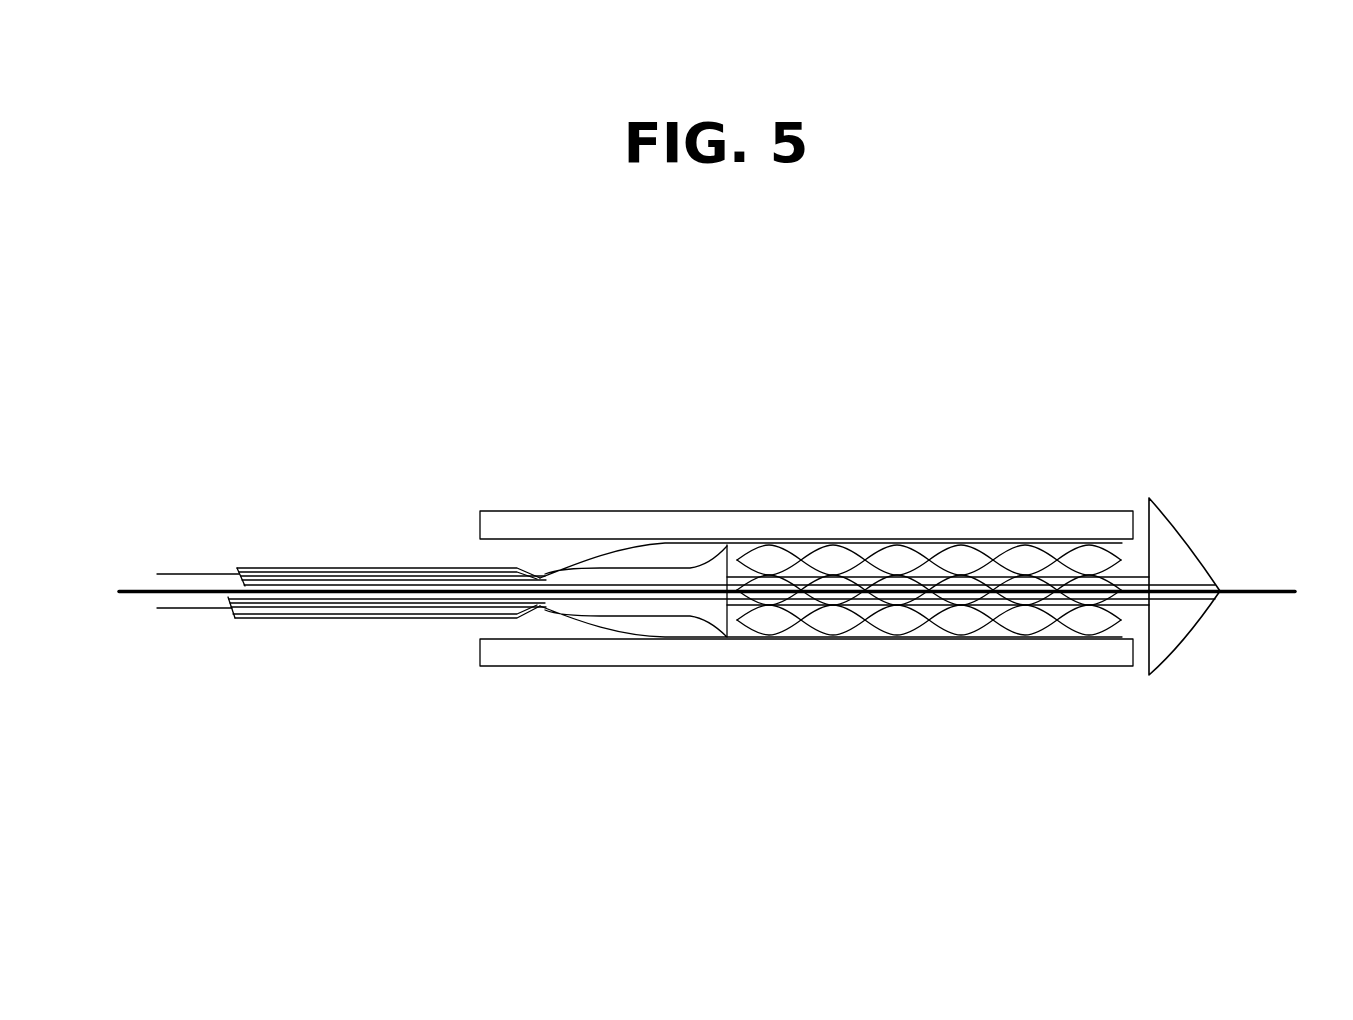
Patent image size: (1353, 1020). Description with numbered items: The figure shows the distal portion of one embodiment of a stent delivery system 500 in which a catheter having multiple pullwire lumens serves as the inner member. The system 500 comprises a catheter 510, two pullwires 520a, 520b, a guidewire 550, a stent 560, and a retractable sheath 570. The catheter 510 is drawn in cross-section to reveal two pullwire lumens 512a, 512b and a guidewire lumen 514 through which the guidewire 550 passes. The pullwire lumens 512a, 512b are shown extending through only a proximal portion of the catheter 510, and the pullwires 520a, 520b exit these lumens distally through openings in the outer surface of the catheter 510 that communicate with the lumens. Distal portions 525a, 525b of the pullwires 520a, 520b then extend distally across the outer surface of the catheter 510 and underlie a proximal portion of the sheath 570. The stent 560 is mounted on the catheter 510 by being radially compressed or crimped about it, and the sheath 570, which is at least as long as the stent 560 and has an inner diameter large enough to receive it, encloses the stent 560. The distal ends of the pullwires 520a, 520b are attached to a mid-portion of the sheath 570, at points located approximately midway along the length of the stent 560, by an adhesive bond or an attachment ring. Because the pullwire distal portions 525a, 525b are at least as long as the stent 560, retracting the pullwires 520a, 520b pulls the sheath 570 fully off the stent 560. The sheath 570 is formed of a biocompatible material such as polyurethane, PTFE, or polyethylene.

The stent delivery system 500 is at (156, 247).
The catheter 510 is at (265, 567).
The pullwire lumen 512a is at (323, 567).
The pullwire lumen 512b is at (323, 616).
The guidewire lumen 514 is at (433, 600).
The pullwire 520a is at (394, 567).
The pullwire 520b is at (398, 612).
The pullwire distal portion 525a is at (590, 547).
The pullwire distal portion 525b is at (594, 630).
The guidewire 550 is at (132, 596).
The stent 560 is at (792, 636).
The retractable sheath 570 is at (888, 522).